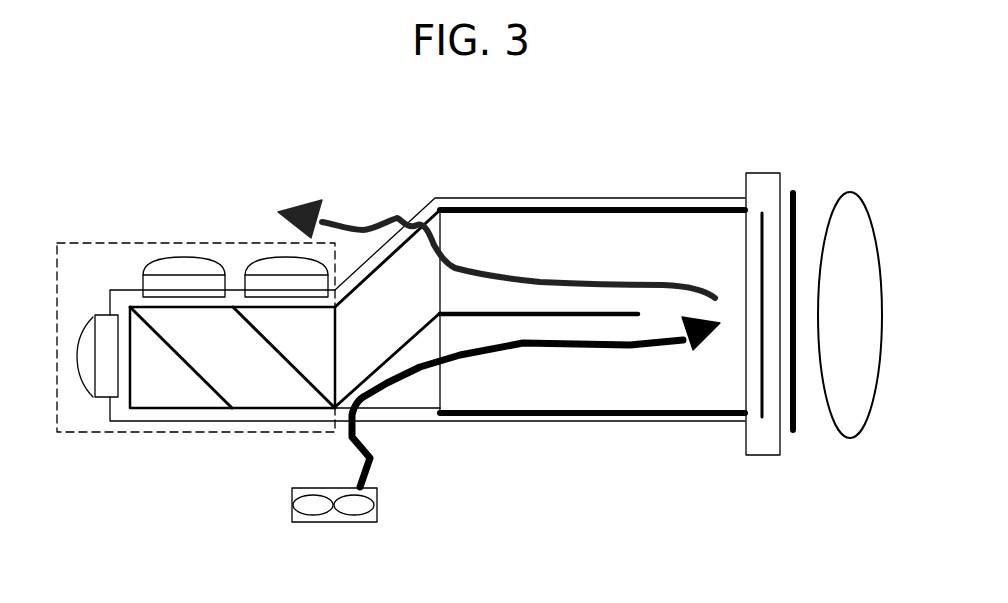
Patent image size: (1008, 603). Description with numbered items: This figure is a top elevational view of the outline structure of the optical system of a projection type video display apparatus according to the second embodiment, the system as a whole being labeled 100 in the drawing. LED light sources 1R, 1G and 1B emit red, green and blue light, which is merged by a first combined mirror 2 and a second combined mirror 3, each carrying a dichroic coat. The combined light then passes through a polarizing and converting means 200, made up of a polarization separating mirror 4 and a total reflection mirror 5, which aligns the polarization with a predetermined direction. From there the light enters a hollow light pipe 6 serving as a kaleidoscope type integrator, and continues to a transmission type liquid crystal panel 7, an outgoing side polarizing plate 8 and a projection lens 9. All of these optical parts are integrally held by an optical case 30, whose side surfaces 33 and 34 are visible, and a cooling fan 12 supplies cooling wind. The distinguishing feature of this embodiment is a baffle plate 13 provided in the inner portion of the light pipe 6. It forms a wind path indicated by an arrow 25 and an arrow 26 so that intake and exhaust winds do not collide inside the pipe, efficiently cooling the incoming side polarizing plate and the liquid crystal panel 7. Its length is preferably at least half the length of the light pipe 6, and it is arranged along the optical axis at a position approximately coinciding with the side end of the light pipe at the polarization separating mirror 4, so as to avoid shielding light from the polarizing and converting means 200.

The illumination unit 100 is at (208, 242).
The LED light source 1G is at (175, 268).
The LED light source 1R is at (282, 268).
The LED light source 1B is at (90, 375).
The first combined mirror 2 is at (207, 383).
The second combined mirror 3 is at (308, 383).
The polarizing and converting means 200 is at (387, 251).
The polarization separating mirror 4 is at (412, 333).
The total reflection mirror 5 is at (338, 143).
The optical case 30 is at (592, 309).
The side surface 33 is at (667, 198).
The side surface 34 is at (640, 425).
The light pipe 6 is at (565, 415).
The baffle plate 13 is at (508, 315).
The arrow 26 is at (525, 270).
The arrow 25 is at (377, 465).
The cooling fan 12 is at (368, 515).
The transmission type liquid crystal panel 7 is at (757, 435).
The outgoing side polarizing plate 8 is at (792, 430).
The projection lens 9 is at (845, 408).